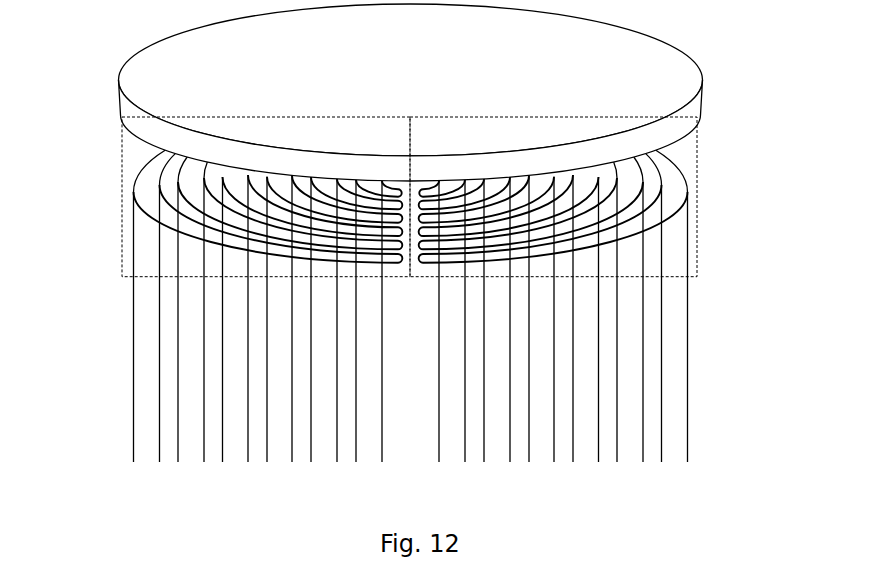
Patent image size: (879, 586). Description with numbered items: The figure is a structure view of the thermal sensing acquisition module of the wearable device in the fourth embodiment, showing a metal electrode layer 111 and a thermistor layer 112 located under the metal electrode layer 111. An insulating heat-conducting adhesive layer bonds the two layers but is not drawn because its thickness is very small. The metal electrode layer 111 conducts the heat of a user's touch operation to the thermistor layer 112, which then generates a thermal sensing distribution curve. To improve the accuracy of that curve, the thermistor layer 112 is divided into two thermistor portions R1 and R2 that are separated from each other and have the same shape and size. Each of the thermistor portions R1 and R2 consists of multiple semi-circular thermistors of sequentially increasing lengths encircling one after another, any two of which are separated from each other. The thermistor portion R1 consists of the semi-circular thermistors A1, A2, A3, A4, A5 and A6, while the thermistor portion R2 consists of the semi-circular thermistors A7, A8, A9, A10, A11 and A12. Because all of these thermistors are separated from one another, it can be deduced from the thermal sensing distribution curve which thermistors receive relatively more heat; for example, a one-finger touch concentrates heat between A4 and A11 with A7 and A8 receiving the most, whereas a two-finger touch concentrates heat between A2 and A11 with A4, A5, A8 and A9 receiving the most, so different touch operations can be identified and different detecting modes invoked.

The metal electrode layer 111 is at (653, 96).
The thermistor layer 112 is at (472, 312).
The thermistor portion R1 is at (122, 233).
The thermistor portion R2 is at (697, 255).
The semi-circular thermistor A1 is at (268, 317).
The semi-circular thermistor A2 is at (290, 321).
The semi-circular thermistor A3 is at (313, 329).
The semi-circular thermistor A4 is at (334, 330).
The semi-circular thermistor A5 is at (356, 330).
The semi-circular thermistor A6 is at (379, 332).
The semi-circular thermistor A7 is at (442, 332).
The semi-circular thermistor A8 is at (464, 330).
The semi-circular thermistor A9 is at (486, 330).
The semi-circular thermistor A10 is at (509, 329).
The semi-circular thermistor A11 is at (531, 321).
The semi-circular thermistor A12 is at (553, 317).